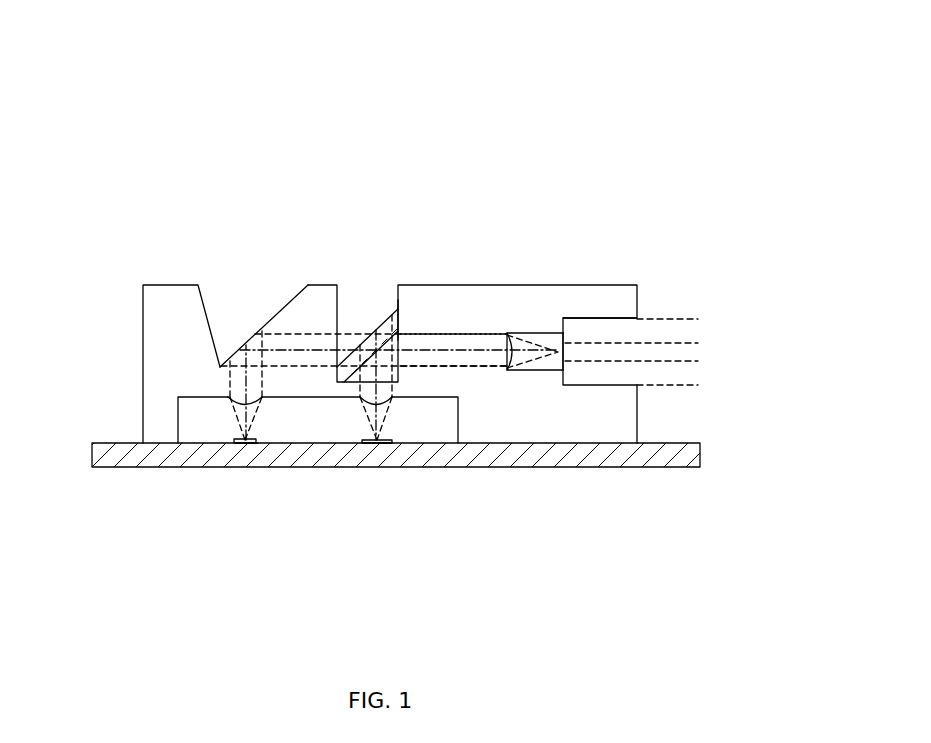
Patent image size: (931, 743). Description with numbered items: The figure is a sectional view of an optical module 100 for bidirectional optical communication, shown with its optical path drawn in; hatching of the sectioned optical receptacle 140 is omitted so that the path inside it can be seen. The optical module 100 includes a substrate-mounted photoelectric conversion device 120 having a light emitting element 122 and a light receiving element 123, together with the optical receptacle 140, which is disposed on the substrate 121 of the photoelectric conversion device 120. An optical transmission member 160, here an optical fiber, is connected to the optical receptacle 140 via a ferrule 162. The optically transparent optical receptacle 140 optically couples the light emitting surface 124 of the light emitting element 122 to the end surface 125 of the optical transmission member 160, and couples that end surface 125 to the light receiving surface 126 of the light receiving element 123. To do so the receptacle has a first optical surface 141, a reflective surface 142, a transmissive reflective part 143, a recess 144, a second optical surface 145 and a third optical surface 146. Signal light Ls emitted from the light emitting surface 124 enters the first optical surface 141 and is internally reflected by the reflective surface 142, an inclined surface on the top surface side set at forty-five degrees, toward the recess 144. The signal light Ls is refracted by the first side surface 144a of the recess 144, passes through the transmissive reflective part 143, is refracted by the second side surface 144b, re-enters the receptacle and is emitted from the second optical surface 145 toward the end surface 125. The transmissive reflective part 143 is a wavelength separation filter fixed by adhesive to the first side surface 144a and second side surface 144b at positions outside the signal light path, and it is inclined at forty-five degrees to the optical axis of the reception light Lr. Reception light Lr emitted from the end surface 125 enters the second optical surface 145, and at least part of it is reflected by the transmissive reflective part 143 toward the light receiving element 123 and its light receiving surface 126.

The optical module 100 is at (712, 123).
The photoelectric conversion device 120 is at (727, 480).
The substrate 121 is at (117, 468).
The light emitting element 122 is at (253, 446).
The light receiving element 123 is at (365, 443).
The light emitting surface 124 is at (248, 441).
The end surface 125 is at (560, 353).
The light receiving surface 126 is at (388, 442).
The optical receptacle 140 is at (78, 260).
The first optical surface 141 is at (233, 437).
The reflective surface 142 is at (290, 312).
The transmissive reflective part 143 is at (400, 323).
The recess 144 is at (413, 240).
The first side surface 144a is at (337, 303).
The second side surface 144b is at (397, 305).
The second optical surface 145 is at (514, 366).
The third optical surface 146 is at (367, 404).
The optical transmission member 160 is at (675, 344).
The ferrule 162 is at (640, 320).
The signal light Ls is at (228, 398).
The reception light Lr is at (392, 402).